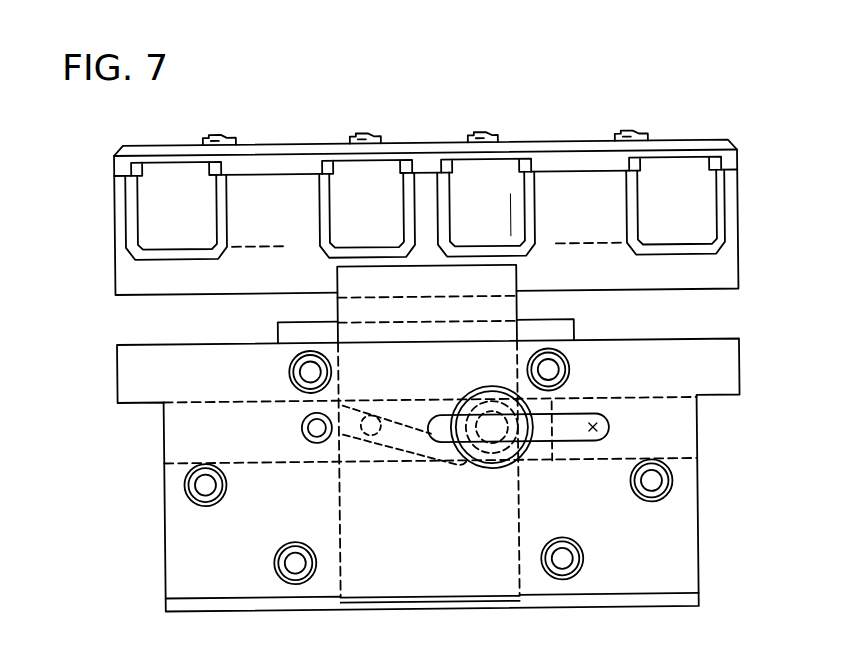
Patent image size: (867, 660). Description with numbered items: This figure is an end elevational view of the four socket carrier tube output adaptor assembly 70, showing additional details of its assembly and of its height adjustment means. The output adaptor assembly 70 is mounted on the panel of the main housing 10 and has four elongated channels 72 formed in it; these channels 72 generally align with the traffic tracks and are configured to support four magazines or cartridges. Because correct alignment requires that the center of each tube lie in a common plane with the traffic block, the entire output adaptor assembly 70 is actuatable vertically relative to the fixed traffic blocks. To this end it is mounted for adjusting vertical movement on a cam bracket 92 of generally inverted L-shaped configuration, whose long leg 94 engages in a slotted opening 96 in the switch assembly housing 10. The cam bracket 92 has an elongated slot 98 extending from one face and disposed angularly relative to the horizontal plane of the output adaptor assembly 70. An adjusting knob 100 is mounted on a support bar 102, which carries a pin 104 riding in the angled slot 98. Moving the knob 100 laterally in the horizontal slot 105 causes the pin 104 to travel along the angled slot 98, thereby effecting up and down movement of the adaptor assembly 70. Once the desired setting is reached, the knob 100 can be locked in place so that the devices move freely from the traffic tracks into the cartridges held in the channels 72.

The main housing 10 is at (132, 345).
The output adaptor assembly 70 is at (699, 140).
The elongated channels 72 is at (138, 210).
The cam bracket 92 is at (517, 310).
The long leg 94 is at (338, 512).
The slotted opening 96 is at (508, 531).
The elongated slot 98 is at (397, 405).
The adjusting knob 100 is at (492, 472).
The support bar 102 is at (551, 452).
The pin 104 is at (377, 434).
The horizontal slot 105 is at (606, 447).